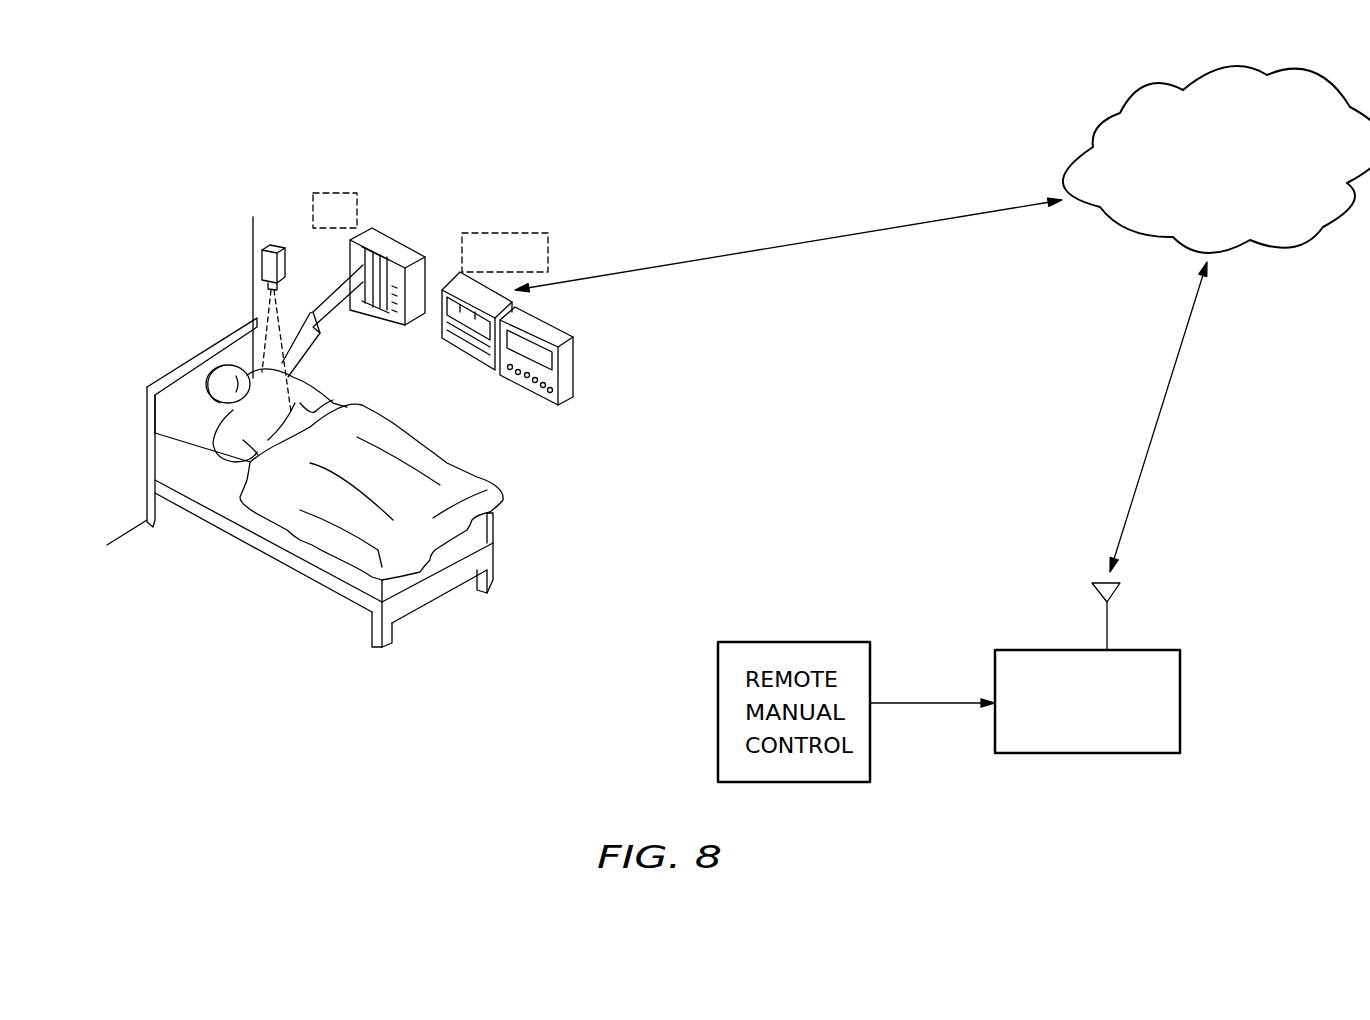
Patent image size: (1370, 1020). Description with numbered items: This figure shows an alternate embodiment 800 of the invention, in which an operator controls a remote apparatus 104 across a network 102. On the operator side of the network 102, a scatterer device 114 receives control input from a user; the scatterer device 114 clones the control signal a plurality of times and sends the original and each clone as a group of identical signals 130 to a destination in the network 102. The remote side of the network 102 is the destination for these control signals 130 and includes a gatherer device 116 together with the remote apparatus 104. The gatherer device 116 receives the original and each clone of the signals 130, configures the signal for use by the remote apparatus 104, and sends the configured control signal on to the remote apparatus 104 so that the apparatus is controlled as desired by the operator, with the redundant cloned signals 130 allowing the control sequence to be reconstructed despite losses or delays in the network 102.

The patient monitoring environment 800 is at (226, 197).
The remote apparatus 104 is at (372, 228).
The gatherer device 116 is at (548, 235).
The network 102 is at (1097, 138).
The identical signals 130 is at (1158, 422).
The scatterer device 114 is at (1083, 753).